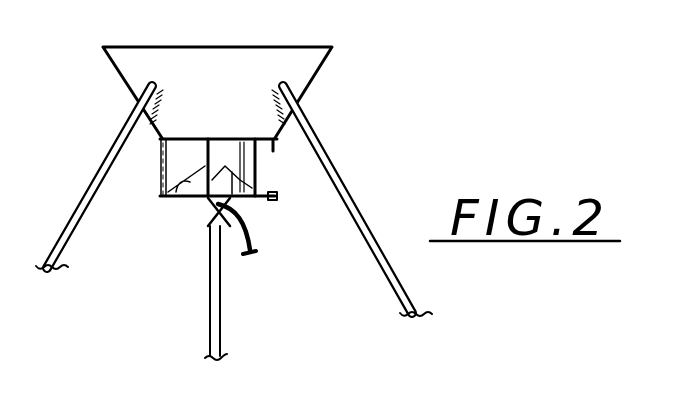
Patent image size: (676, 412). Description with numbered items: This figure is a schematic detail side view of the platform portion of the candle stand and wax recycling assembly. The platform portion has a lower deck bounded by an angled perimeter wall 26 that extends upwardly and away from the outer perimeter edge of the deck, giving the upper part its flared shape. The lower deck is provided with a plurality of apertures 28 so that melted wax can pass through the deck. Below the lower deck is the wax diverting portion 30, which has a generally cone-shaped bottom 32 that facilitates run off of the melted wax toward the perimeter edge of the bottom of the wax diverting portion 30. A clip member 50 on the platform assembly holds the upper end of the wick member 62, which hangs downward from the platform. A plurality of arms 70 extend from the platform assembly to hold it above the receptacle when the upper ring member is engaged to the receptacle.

The angled perimeter wall 26 is at (336, 46).
The arms 70 is at (322, 138).
The apertures 28 is at (186, 160).
The cone-shaped bottom 32 is at (160, 198).
The wax diverting portion 30 is at (274, 199).
The clip member 50 is at (200, 238).
The wick member 62 is at (222, 300).